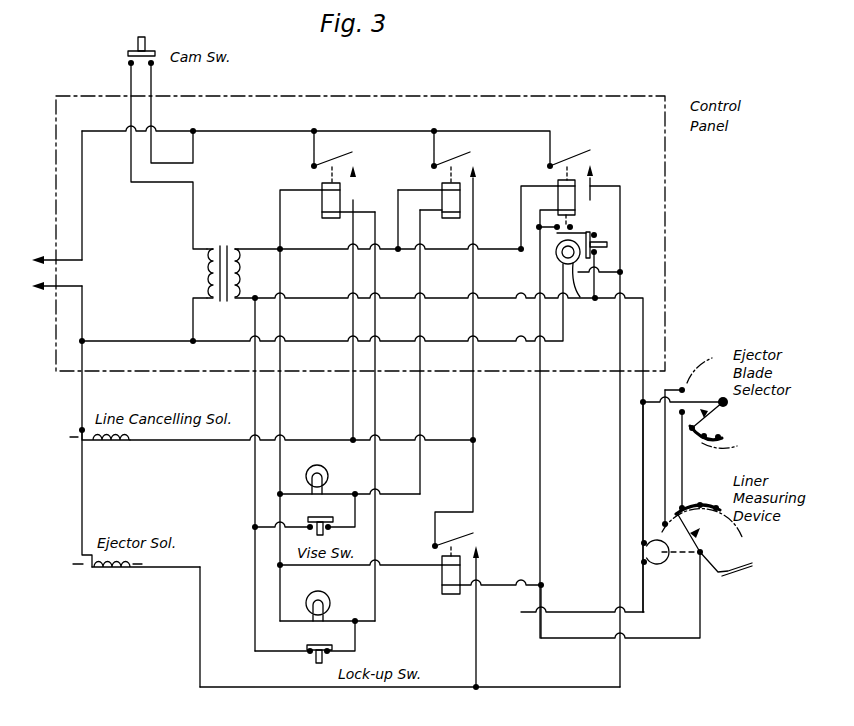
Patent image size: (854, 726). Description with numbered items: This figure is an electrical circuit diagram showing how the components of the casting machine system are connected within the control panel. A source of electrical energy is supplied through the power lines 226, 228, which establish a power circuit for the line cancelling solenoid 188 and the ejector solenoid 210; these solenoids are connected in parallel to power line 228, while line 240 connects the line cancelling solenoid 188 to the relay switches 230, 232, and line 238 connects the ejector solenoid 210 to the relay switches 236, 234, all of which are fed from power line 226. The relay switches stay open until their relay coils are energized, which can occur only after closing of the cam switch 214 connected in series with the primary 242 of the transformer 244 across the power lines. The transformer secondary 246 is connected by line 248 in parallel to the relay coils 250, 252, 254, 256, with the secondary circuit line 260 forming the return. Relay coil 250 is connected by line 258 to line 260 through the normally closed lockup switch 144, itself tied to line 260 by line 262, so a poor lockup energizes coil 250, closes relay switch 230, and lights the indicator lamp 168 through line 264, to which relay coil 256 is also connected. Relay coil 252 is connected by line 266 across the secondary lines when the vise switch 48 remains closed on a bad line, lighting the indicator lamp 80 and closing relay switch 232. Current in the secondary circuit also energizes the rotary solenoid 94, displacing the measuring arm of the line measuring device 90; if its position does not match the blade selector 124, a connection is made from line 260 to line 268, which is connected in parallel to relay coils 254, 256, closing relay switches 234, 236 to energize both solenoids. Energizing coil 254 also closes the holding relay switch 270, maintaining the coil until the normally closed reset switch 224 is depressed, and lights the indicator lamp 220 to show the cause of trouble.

The cam switch 214 is at (126, 45).
The power line 226 is at (82, 223).
The power line 228 is at (82, 296).
The transformer primary 242 is at (205, 278).
The transformer 244 is at (222, 240).
The transformer secondary 246 is at (246, 289).
The line 248 is at (251, 243).
The secondary circuit line 260 is at (314, 296).
The relay switch 230 is at (354, 153).
The relay coil 250 is at (331, 198).
The relay switch 232 is at (472, 153).
The relay coil 252 is at (452, 205).
The relay switch 234 is at (591, 151).
The relay coil 254 is at (520, 412).
The holding relay switch 270 is at (572, 226).
The reset switch 224 is at (606, 235).
The indicator lamp 220 is at (665, 150).
The line 264 is at (280, 393).
The line 258 is at (375, 388).
The line 266 is at (445, 408).
The line 262 is at (255, 612).
The line 240 is at (177, 442).
The line cancelling solenoid 188 is at (113, 455).
The ejector solenoid 210 is at (124, 580).
The indicator lamp 80 is at (333, 478).
The vise switch 48 is at (342, 533).
The indicator lamp 168 is at (352, 597).
The lockup switch 144 is at (304, 661).
The relay switch 236 is at (475, 534).
The relay coil 256 is at (445, 575).
The line 238 is at (537, 688).
The line 268 is at (700, 616).
The rotary solenoid 94 is at (666, 576).
The blade selector 124 is at (733, 418).
The line measuring device 90 is at (733, 544).